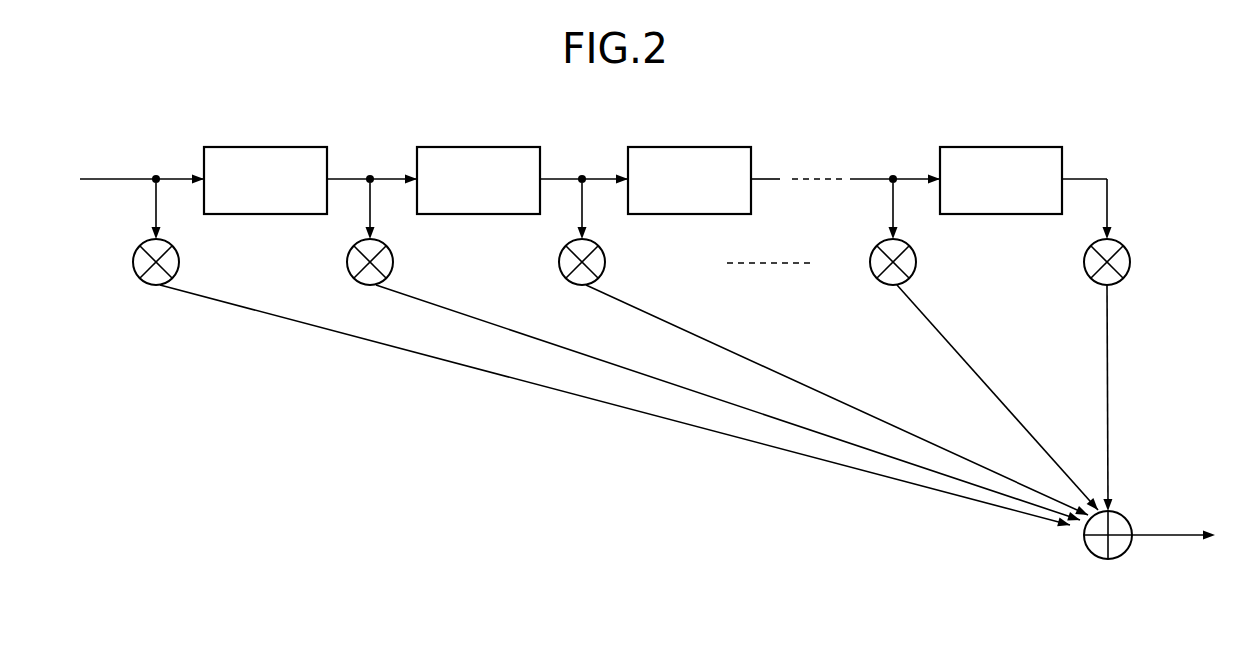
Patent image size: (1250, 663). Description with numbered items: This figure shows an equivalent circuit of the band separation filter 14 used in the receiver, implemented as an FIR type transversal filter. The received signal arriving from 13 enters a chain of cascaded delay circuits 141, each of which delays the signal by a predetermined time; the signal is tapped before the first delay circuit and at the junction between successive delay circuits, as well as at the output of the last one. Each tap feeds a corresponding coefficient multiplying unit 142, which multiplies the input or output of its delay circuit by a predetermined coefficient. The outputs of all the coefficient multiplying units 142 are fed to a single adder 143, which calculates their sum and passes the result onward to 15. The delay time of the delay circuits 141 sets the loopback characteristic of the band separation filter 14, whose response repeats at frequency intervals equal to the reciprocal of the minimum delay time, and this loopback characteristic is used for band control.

The band separation filter 14 is at (680, 537).
The preceding stage (input source) 13 is at (120, 179).
The following stage (output destination) 15 is at (1160, 532).
The delay circuits 141 is at (633, 160).
The coefficient multiplying units 142 is at (670, 352).
The adder 143 is at (1092, 556).